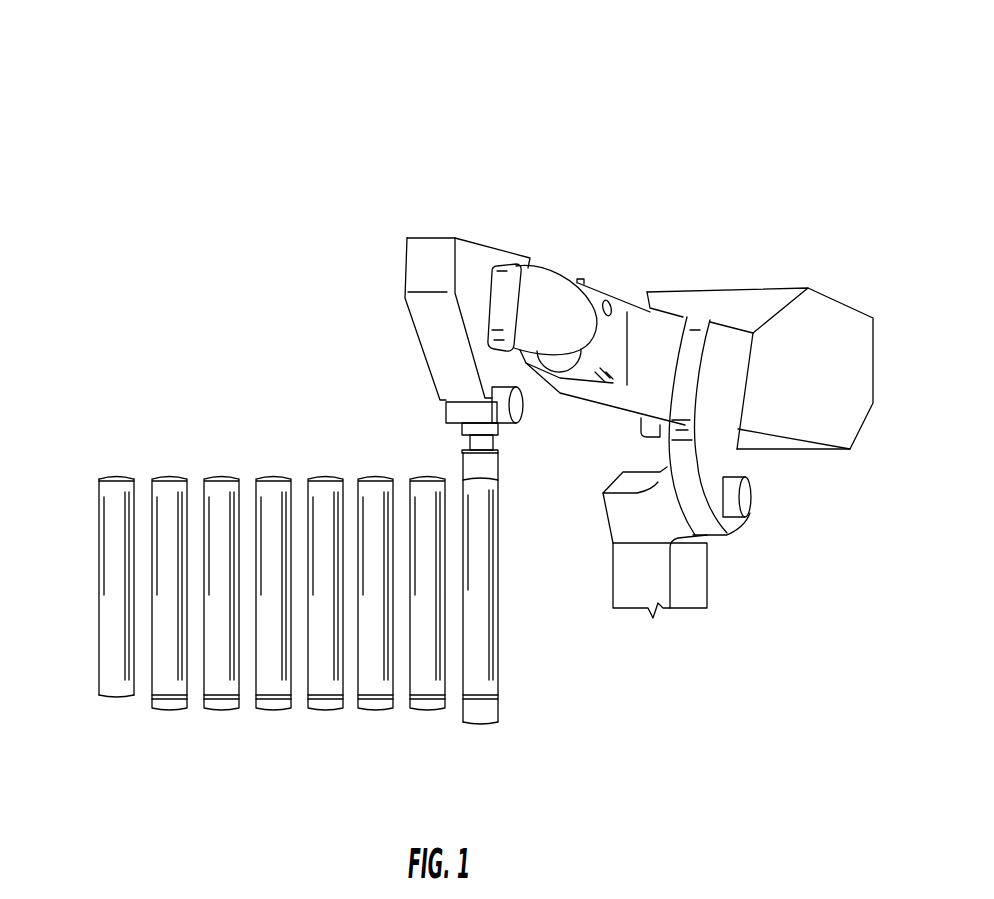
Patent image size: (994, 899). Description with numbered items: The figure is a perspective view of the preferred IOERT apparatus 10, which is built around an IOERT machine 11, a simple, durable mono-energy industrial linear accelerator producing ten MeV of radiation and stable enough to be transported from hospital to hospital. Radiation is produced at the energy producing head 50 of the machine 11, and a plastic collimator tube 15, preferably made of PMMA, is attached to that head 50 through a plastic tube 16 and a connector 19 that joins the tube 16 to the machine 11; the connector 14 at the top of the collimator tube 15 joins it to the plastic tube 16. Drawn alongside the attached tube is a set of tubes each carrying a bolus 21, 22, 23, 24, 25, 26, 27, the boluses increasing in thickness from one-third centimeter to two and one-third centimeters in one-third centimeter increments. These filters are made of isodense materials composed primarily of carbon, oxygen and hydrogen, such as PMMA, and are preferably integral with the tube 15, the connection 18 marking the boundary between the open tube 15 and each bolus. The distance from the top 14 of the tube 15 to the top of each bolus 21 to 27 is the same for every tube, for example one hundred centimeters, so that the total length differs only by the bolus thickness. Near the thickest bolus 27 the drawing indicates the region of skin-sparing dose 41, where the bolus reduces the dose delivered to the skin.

The IOERT apparatus 10 is at (745, 47).
The IOERT machine 11 is at (700, 290).
The connector between tube 15 and tube 16 14 is at (103, 478).
The plastic collimator tube 15 is at (108, 607).
The plastic tube 16 is at (498, 462).
The connection between boluses and tube 18 is at (152, 694).
The connector between tube 16 and IOERT machine 11 19 is at (470, 443).
The 1/3 cm thick bolus 21 is at (173, 709).
The 2/3 cm thick bolus 22 is at (226, 709).
The 1 cm thick bolus 23 is at (278, 709).
The 1 1/3 cm thick bolus 24 is at (330, 709).
The 1 2/3 cm thick bolus 25 is at (380, 709).
The 2 cm thick bolus 26 is at (435, 709).
The 2 1/3 cm thick bolus 27 is at (497, 706).
The region of skin-sparing dose 41 is at (502, 700).
The energy producing head of IOERT machine 50 is at (407, 258).